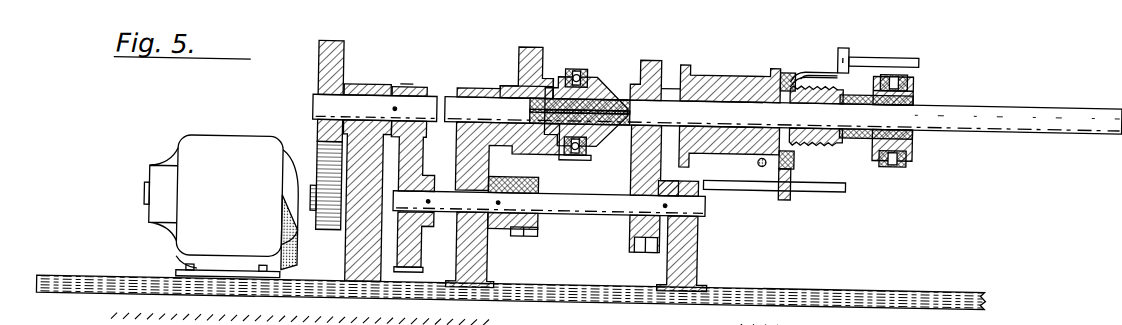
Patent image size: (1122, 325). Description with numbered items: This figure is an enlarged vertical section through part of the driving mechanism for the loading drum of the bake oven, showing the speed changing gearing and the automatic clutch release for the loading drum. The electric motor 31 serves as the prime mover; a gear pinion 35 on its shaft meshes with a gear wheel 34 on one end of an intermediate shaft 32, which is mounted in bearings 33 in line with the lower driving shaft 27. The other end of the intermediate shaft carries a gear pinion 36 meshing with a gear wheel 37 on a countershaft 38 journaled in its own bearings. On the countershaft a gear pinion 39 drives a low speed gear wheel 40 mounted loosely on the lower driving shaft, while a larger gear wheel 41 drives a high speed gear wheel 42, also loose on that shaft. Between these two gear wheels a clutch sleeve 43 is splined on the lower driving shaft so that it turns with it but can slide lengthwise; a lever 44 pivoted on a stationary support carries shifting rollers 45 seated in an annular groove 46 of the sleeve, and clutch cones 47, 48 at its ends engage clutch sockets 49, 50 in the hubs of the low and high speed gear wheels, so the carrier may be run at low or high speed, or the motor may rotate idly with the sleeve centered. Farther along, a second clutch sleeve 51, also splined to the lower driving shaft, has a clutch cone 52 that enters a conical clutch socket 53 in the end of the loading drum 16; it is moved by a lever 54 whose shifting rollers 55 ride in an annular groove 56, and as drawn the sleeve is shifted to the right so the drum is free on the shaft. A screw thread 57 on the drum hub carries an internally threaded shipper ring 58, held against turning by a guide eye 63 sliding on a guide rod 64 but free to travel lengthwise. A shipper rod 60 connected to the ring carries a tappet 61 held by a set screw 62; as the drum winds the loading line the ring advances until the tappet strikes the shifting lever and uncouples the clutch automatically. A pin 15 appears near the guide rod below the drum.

The pin 15 is at (759, 156).
The loading drum 16 is at (722, 76).
The lower driving shaft 27 is at (1055, 120).
The electric motor 31 is at (221, 206).
The intermediate shaft 32 is at (313, 103).
The bearings 33 is at (366, 88).
The gear wheel 34 is at (338, 40).
The gear pinion 35 is at (325, 226).
The gear pinion 36 is at (405, 87).
The gear wheel 37 is at (402, 264).
The countershaft 38 is at (583, 208).
The gear pinion 39 is at (522, 232).
The gear wheel 40 is at (526, 44).
The gear wheel 41 is at (650, 244).
The gear wheel 42 is at (648, 88).
The clutch sleeve 43 is at (594, 150).
The lever 44 is at (582, 64).
The shifting rollers 45 is at (572, 68).
The annular groove 46 is at (610, 80).
The clutch cone 47 is at (552, 72).
The clutch cone 48 is at (606, 92).
The clutch socket 49 is at (530, 86).
The clutch socket 50 is at (654, 92).
The clutch sleeve 51 is at (914, 88).
The clutch cone 52 is at (866, 47).
The conical clutch socket 53 is at (814, 137).
The lever 54 is at (900, 66).
The shifting rollers 55 is at (908, 70).
The annular groove 56 is at (913, 143).
The screw thread 57 is at (817, 85).
The shipper ring 58 is at (788, 63).
The shipper rod 60 is at (892, 62).
The tappet 61 is at (843, 38).
The set screw 62 is at (836, 58).
The guide eye 63 is at (786, 191).
The guide rod 64 is at (738, 183).